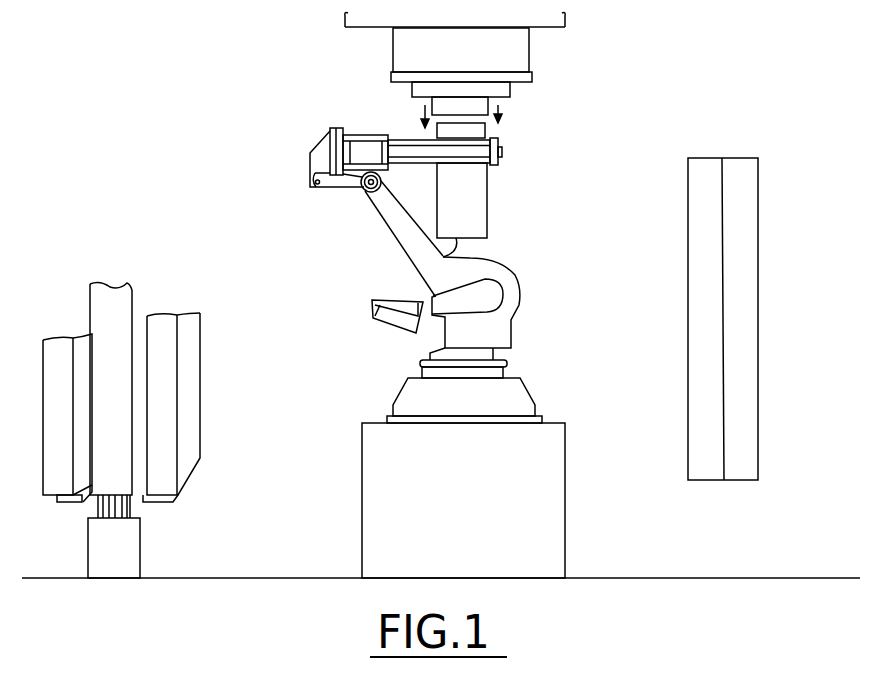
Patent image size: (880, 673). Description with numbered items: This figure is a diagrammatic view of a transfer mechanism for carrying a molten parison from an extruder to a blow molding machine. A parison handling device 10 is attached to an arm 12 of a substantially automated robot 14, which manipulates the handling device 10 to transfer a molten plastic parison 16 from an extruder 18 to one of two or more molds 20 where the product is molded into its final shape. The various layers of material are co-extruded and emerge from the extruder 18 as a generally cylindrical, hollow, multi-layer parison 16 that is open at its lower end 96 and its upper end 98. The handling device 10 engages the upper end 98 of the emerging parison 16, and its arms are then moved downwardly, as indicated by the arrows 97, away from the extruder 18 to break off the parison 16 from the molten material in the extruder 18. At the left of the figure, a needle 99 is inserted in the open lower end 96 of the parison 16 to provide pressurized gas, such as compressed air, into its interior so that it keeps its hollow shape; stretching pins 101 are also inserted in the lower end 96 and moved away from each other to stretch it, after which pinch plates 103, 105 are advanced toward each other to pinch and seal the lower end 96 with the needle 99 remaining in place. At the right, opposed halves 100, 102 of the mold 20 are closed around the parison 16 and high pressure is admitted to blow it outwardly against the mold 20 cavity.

The parison handling device 10 is at (503, 140).
The arm 12 is at (358, 132).
The robot 14 is at (525, 277).
The parison 16 is at (488, 197).
The extruder 18 is at (530, 47).
The mold 20 is at (753, 402).
The lower end 96 is at (440, 258).
The arrows 97 is at (425, 105).
The upper end 98 is at (452, 123).
The needle 99 is at (117, 517).
The mold half 100 is at (53, 343).
The stretching pins 101 is at (100, 508).
The mold half 102 is at (162, 323).
The pinch plate 103 is at (73, 503).
The pinch plate 105 is at (177, 500).